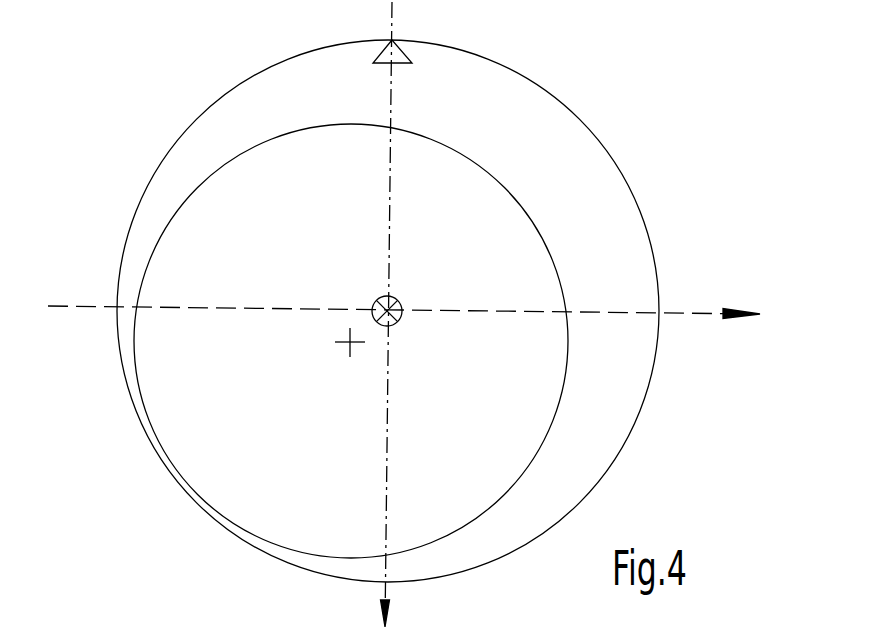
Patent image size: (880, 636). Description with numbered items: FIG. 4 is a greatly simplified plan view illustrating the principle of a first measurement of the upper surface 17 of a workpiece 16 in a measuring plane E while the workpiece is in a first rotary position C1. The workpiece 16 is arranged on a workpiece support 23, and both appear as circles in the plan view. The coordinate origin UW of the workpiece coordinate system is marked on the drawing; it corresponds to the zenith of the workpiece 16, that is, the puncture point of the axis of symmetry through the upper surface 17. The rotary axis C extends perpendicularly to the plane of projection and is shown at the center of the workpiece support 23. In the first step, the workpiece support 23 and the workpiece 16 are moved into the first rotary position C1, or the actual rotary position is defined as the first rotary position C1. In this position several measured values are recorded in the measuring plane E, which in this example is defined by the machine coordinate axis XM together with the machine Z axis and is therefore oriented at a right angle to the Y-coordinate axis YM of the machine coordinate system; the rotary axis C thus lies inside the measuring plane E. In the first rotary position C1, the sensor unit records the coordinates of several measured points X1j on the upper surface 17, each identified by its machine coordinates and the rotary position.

The workpiece 16 is at (132, 372).
The upper surface 17 is at (178, 428).
The workpiece support 23 is at (615, 443).
The rotary axis C is at (398, 299).
The first rotary position C1 is at (463, 30).
The measuring plane E is at (395, 80).
The coordinate origin of the workpiece coordinate system UW is at (346, 346).
The machine coordinate axis XM is at (403, 317).
The Y-coordinate axis of the machine coordinate system YM is at (424, 313).
The measured points X1j is at (388, 381).